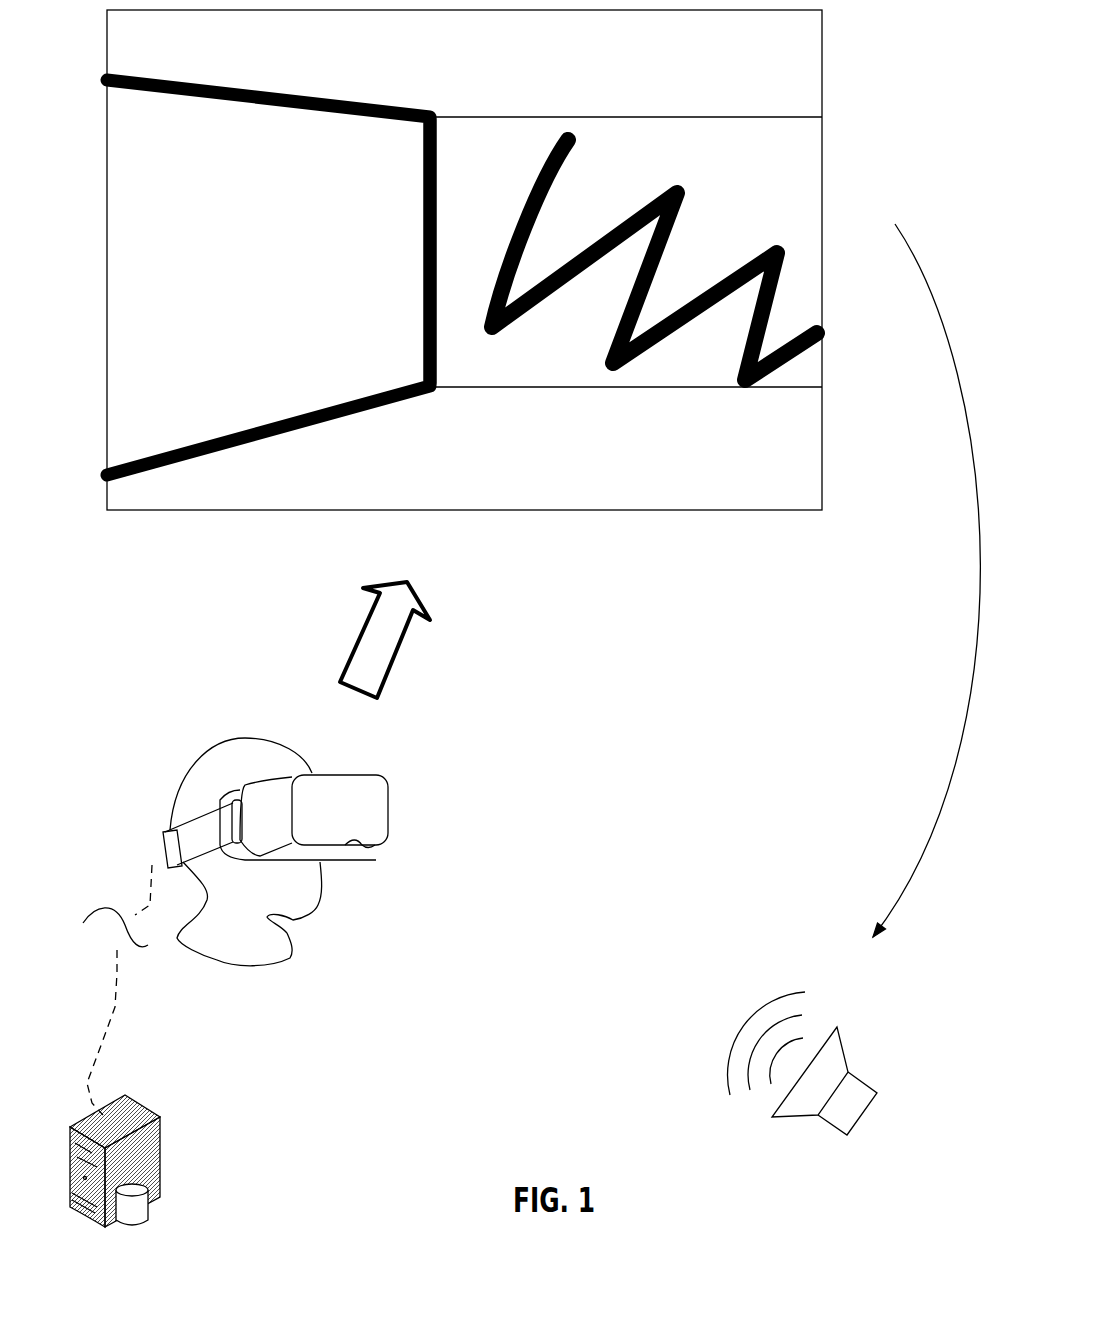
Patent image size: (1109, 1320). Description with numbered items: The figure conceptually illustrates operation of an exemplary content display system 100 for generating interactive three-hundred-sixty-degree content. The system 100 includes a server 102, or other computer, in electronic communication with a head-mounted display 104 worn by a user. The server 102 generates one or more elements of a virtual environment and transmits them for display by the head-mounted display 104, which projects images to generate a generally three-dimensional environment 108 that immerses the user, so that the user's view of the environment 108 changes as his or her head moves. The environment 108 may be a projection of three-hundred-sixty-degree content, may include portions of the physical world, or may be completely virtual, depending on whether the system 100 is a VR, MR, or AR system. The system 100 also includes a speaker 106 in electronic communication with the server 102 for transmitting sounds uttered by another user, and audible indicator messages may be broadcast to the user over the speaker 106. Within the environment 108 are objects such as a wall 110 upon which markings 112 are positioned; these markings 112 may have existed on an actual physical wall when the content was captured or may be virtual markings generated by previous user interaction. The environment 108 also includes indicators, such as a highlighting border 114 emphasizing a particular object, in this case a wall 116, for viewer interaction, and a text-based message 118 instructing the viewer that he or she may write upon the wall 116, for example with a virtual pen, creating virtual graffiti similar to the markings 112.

The 360-degree content display system 100 is at (611, 786).
The server 102 is at (162, 1145).
The head-mounted display 104 is at (203, 833).
The speaker 106 is at (862, 1078).
The environment 108 is at (595, 510).
The wall 110 is at (600, 387).
The markings 112 is at (687, 205).
The highlighting border 114 is at (435, 188).
The wall 116 is at (313, 150).
The message 118 is at (228, 224).